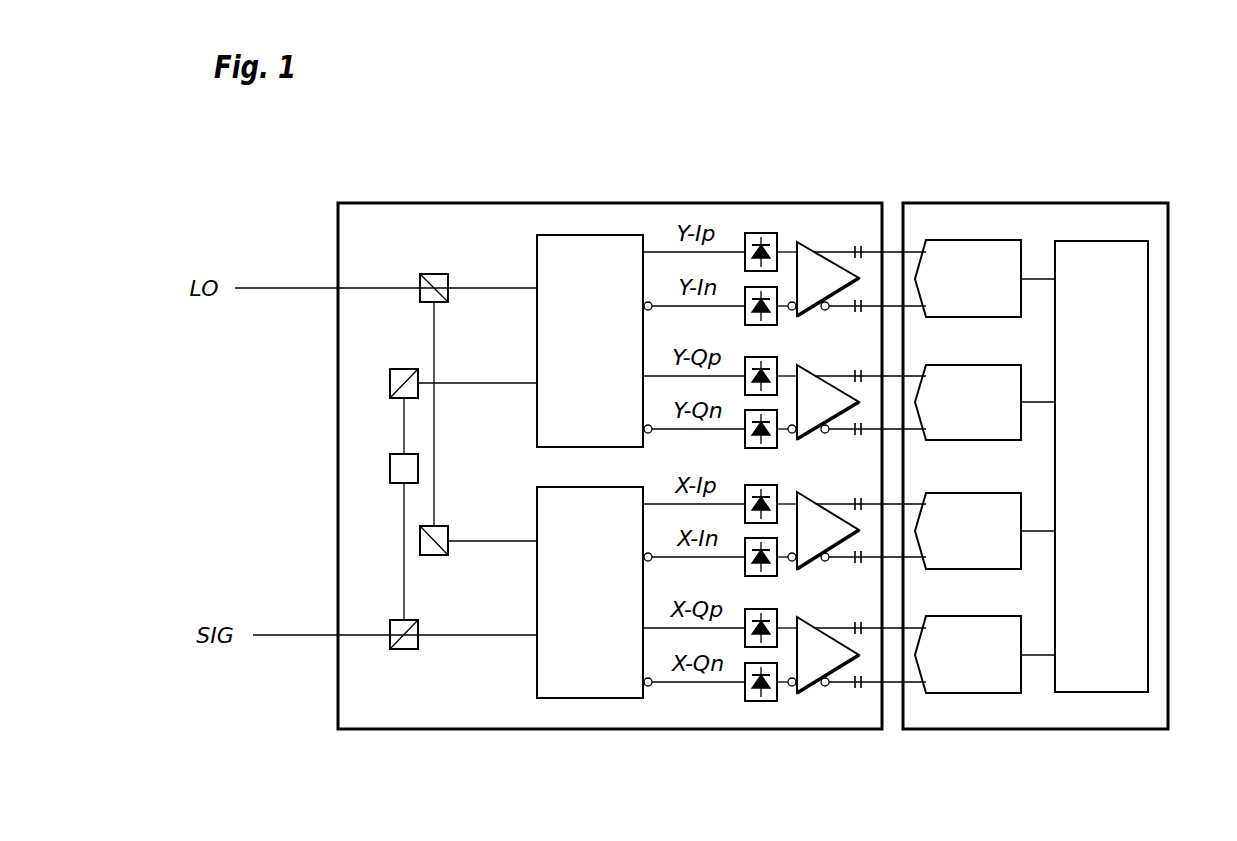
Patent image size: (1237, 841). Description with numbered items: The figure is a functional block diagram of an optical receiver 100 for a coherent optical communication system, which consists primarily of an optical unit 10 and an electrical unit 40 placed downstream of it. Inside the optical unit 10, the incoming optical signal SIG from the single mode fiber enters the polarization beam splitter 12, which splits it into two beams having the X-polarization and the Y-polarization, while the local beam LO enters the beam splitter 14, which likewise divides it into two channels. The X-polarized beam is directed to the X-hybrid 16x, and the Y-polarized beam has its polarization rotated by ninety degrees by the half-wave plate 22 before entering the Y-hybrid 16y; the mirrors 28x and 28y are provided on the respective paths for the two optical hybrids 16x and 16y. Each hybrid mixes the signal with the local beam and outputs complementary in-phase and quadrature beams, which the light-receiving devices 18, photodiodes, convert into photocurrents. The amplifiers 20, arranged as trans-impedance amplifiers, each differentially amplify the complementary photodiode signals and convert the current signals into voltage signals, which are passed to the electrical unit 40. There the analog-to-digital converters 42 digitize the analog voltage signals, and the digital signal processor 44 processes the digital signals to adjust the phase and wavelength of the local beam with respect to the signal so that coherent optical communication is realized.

The optical receiver 100 is at (1136, 140).
The optical unit 10 is at (405, 202).
The polarization beam splitter 12 is at (392, 620).
The beam splitter 14 is at (418, 277).
The X-hybrid 16x is at (592, 685).
The Y-hybrid 16y is at (602, 248).
The light-receiving devices 18 is at (757, 232).
The amplifiers 20 is at (812, 263).
The half-wave plate 22 is at (389, 468).
The mirror 28x is at (418, 542).
The mirror 28y is at (388, 385).
The electrical unit 40 is at (1027, 202).
The analog-to-digital converters 42 is at (953, 247).
The digital signal processor 44 is at (1097, 265).